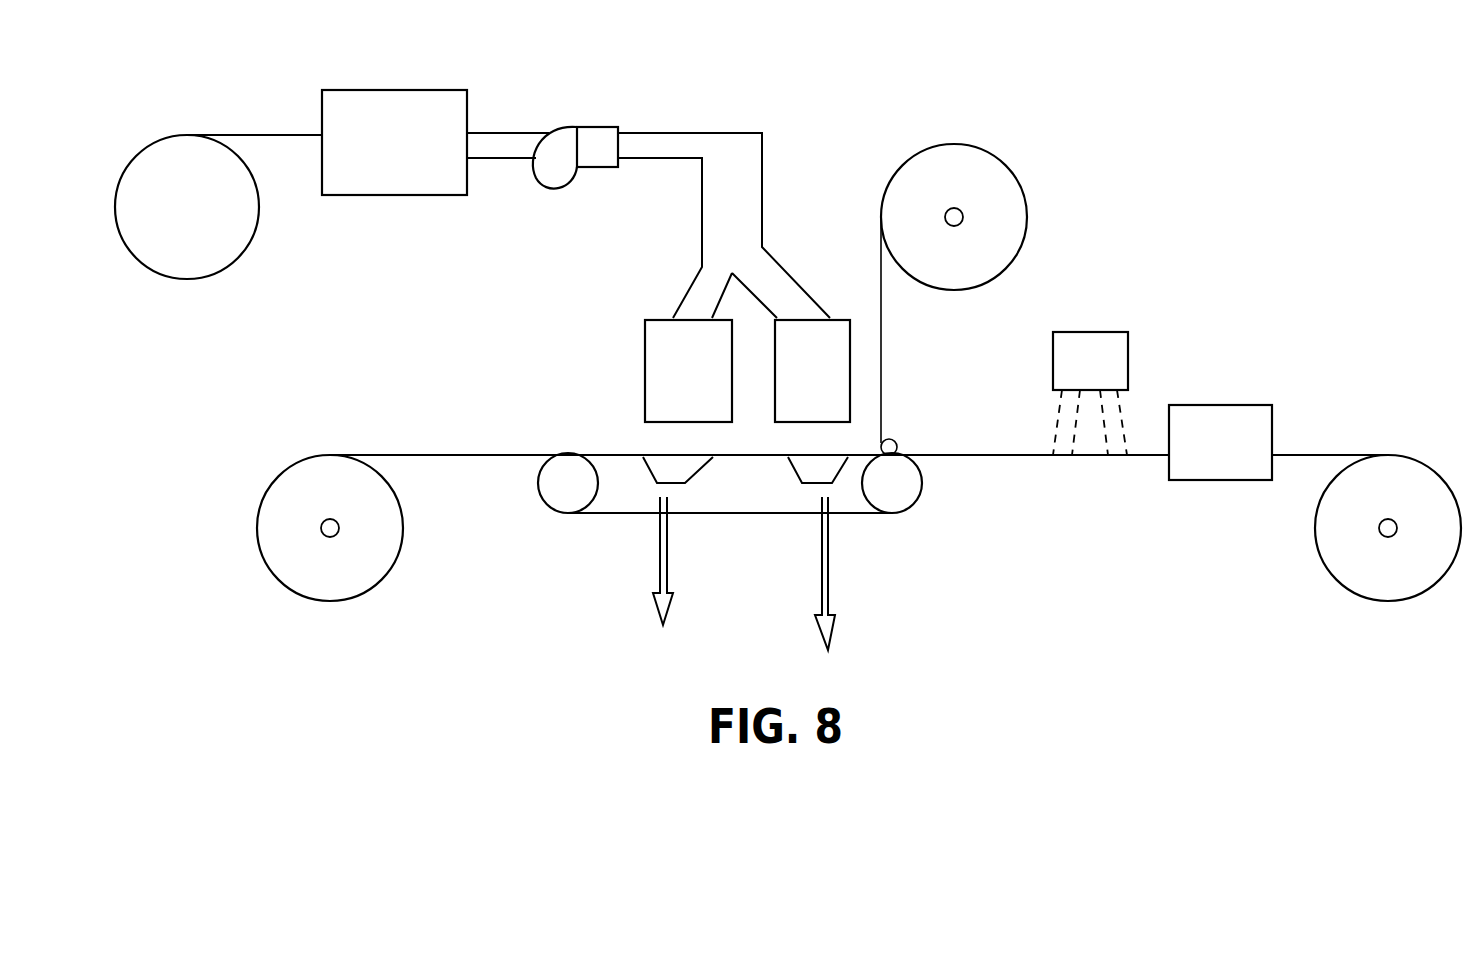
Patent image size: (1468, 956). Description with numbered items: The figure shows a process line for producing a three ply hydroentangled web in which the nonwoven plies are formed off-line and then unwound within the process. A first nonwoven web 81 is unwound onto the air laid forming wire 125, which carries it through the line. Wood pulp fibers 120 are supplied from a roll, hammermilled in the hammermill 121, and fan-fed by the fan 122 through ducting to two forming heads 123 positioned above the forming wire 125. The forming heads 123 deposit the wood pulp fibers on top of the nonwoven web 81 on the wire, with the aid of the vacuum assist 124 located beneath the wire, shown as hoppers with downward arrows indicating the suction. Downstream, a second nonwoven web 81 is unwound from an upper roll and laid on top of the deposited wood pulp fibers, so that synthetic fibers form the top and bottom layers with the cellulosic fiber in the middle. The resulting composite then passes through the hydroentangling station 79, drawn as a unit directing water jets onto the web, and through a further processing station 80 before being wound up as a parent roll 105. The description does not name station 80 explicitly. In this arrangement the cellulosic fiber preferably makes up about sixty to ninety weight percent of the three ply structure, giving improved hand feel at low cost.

The hydroentangling station 79 is at (1098, 342).
The processing station 80 is at (1217, 415).
The nonwoven web 81 is at (1002, 260).
The parent roll 105 is at (1333, 560).
The wood pulp fibers 120 is at (163, 145).
The hammermill 121 is at (360, 92).
The fan 122 is at (583, 133).
The forming heads 123 is at (652, 342).
The vacuum assist 124 is at (655, 468).
The air laid forming wire 125 is at (715, 515).